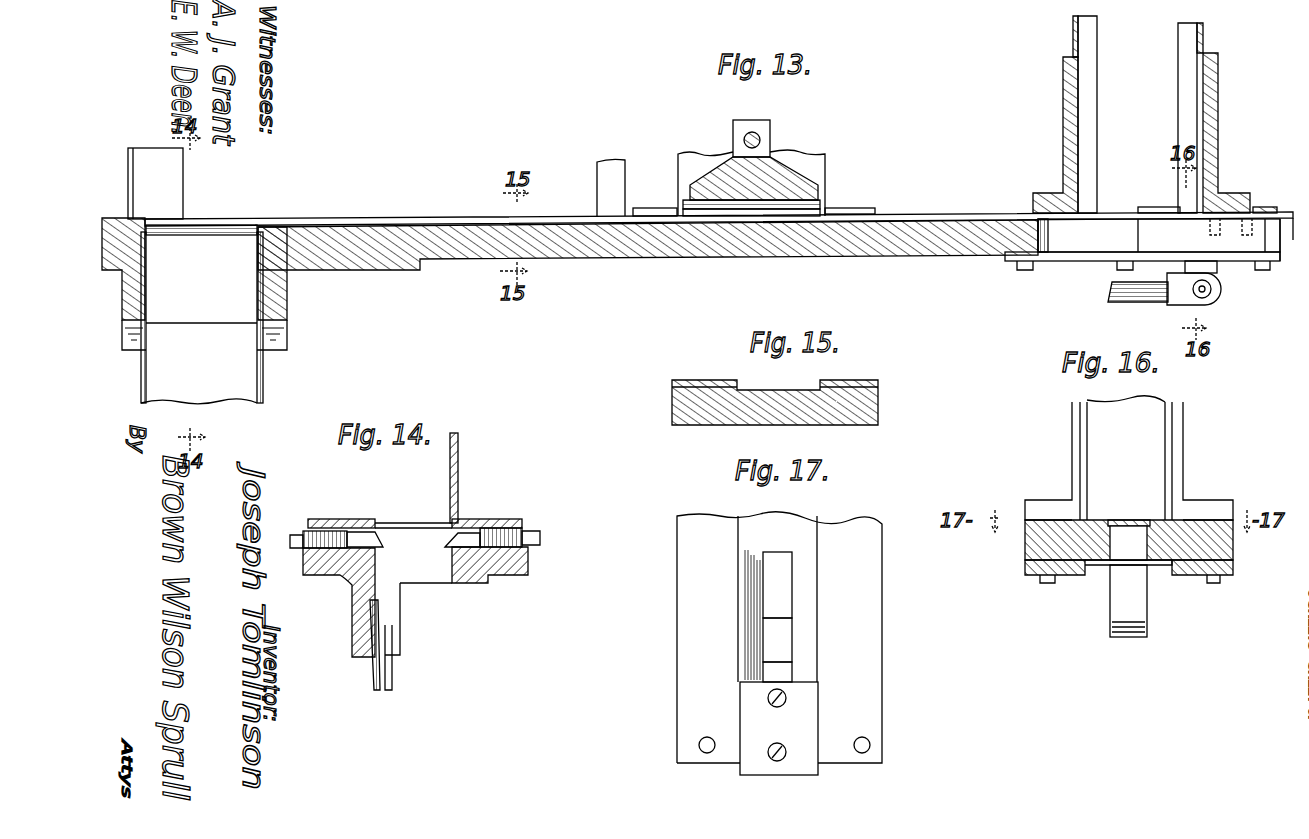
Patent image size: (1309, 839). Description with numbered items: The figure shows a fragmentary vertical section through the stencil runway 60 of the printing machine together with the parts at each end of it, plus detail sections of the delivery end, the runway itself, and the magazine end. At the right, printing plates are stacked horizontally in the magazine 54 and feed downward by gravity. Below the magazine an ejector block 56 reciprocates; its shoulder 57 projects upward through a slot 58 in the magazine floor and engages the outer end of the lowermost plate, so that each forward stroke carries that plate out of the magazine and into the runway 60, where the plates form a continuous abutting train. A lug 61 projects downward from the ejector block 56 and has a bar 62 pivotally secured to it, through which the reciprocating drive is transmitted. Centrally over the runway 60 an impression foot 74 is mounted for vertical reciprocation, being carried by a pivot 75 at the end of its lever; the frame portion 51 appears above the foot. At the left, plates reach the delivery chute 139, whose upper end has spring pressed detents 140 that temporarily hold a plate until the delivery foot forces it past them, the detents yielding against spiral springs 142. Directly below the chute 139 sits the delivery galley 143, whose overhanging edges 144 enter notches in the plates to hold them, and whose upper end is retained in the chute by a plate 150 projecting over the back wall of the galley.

In FIG. 13, the frame 51 is at (704, 160).
In FIG. 13, the magazine 54 is at (1066, 108).
In FIG. 16, the magazine 54 is at (1072, 462).
In FIG. 13, the ejector block 56 is at (1262, 238).
In FIG. 17, the ejector block 56 is at (780, 632).
In FIG. 13, the shoulder 57 is at (1182, 212).
In FIG. 16, the shoulder 57 is at (1130, 520).
In FIG. 17, the shoulder 57 is at (782, 660).
In FIG. 13, the slot 58 is at (1118, 226).
In FIG. 16, the slot 58 is at (1118, 550).
In FIG. 17, the slot 58 is at (785, 595).
In FIG. 13, the runway 60 is at (955, 220).
In FIG. 15, the runway 60 is at (807, 378).
In FIG. 13, the lug 61 is at (1222, 280).
In FIG. 16, the lug 61 is at (1138, 603).
In FIG. 17, the lug 61 is at (779, 728).
In FIG. 13, the bar 62 is at (1138, 300).
In FIG. 13, the impression foot 74 is at (785, 185).
In FIG. 13, the pivot 75 is at (762, 142).
In FIG. 13, the delivery chute 139 is at (232, 248).
In FIG. 13, the spring pressed detents 140 is at (200, 222).
In FIG. 14, the spring pressed detents 140 is at (358, 524).
In FIG. 14, the spiral springs 142 is at (305, 578).
In FIG. 13, the delivery galley 143 is at (265, 372).
In FIG. 14, the delivery galley 143 is at (370, 684).
In FIG. 14, the overhanging edges 144 is at (393, 682).
In FIG. 14, the plate 150 is at (400, 630).